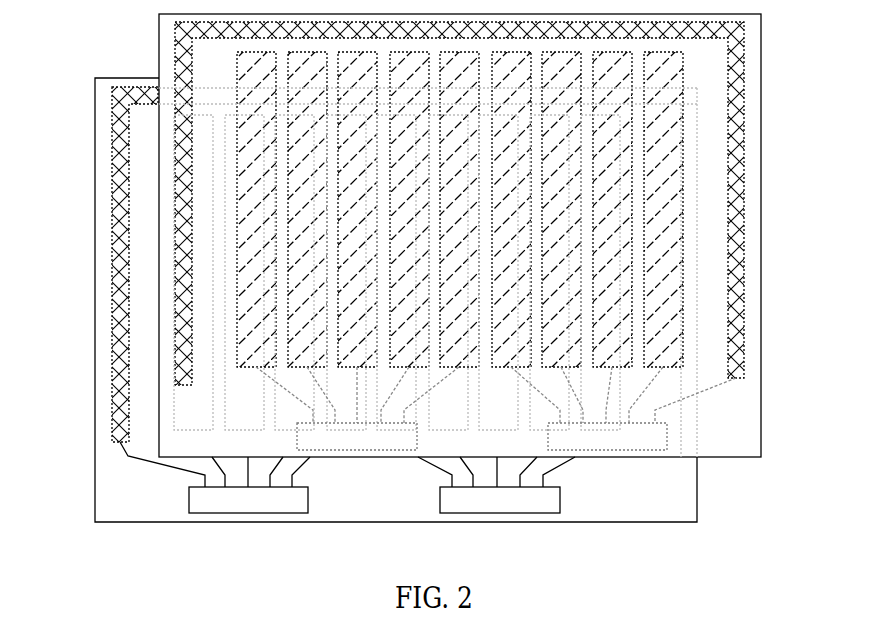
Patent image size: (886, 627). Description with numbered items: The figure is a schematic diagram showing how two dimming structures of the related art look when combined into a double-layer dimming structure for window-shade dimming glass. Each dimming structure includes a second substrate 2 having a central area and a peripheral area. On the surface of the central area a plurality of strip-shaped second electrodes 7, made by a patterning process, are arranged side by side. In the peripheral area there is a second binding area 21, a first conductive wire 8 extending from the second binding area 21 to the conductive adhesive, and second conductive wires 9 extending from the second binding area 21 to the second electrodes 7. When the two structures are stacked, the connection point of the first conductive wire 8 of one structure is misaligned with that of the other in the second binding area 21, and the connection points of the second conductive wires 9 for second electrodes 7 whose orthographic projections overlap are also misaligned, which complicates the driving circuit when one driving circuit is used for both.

The second substrate 2 is at (748, 28).
The second electrode 7 is at (680, 60).
The first conductive wire 8 is at (162, 467).
The second conductive wire 9 is at (320, 456).
The second binding area 21 is at (256, 522).